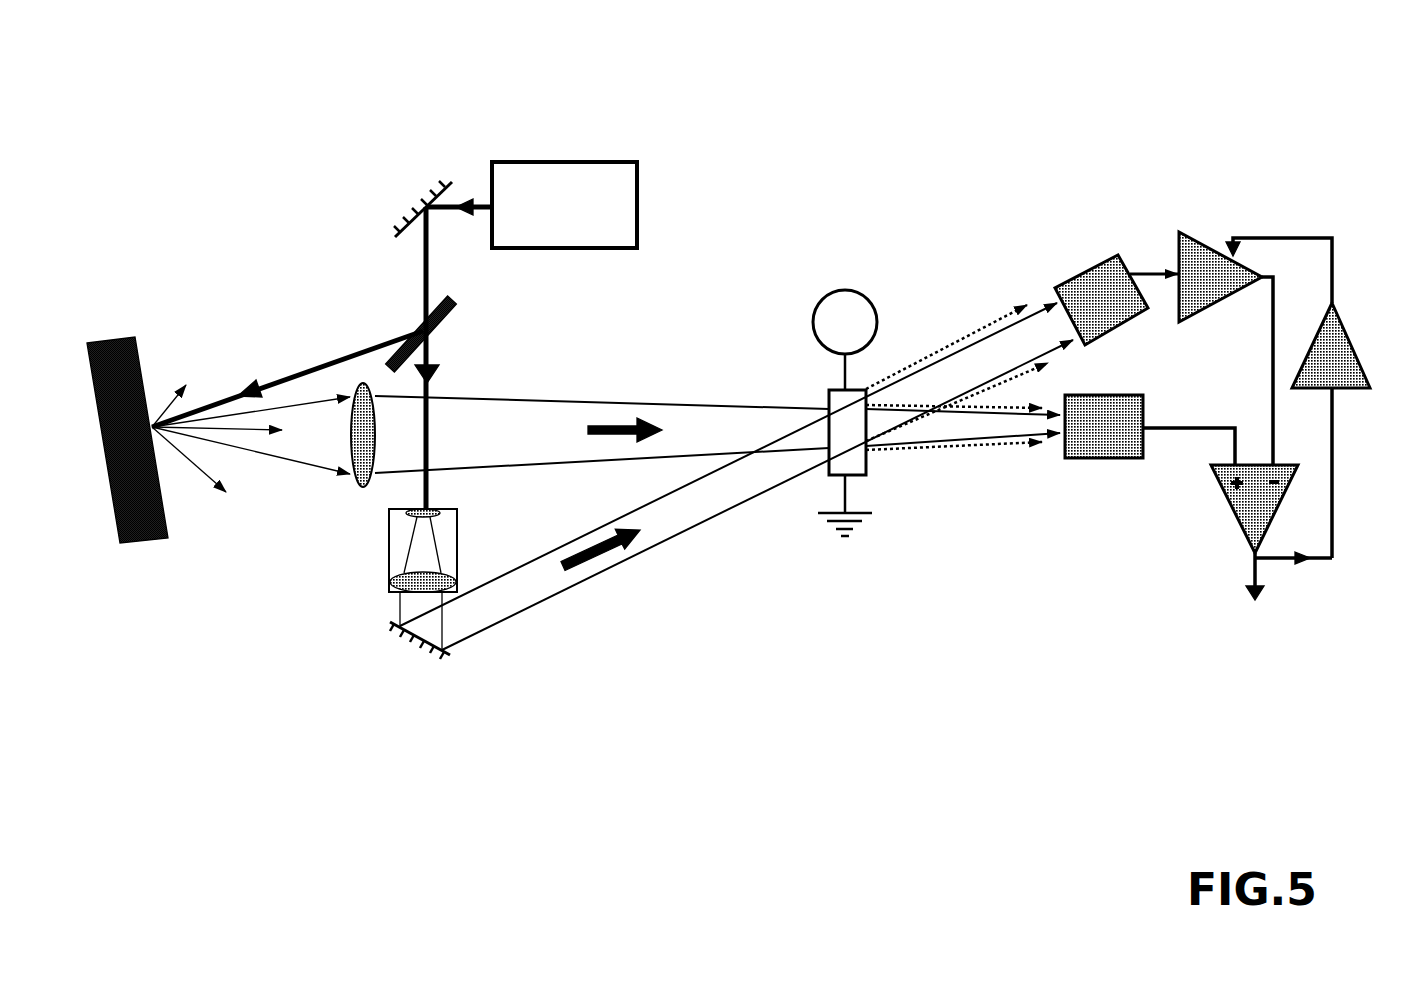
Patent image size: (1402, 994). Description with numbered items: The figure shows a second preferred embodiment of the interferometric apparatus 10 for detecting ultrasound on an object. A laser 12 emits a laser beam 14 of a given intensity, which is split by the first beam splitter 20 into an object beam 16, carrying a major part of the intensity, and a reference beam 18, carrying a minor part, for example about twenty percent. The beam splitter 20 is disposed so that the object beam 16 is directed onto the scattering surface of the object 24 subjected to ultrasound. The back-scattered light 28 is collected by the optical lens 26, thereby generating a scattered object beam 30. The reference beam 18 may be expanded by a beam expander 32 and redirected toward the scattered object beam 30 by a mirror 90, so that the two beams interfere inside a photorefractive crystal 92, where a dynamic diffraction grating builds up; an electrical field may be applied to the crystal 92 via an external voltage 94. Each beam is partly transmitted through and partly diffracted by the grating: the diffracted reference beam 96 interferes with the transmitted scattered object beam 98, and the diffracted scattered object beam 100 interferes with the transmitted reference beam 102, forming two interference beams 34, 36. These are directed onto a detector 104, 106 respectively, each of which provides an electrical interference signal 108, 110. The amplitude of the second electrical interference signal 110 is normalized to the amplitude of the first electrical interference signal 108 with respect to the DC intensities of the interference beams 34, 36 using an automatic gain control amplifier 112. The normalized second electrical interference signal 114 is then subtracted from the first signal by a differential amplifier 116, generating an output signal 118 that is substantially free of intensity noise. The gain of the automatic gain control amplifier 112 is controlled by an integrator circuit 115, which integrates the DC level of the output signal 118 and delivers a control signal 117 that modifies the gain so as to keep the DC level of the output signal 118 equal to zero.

The interferometric apparatus 10 is at (882, 70).
The laser 12 is at (620, 217).
The laser beam 14 is at (483, 200).
The object beam 16 is at (352, 356).
The reference beam 18 is at (432, 382).
The first beam splitter 20 is at (450, 302).
The object 24 is at (118, 340).
The optical lens 26 is at (360, 493).
The back-scattered light 28 is at (307, 468).
The scattered object beam 30 is at (548, 425).
The beam expander 32 is at (388, 545).
The first interference beam 34 is at (942, 425).
The second interference beam 36 is at (952, 375).
The mirror 90 is at (442, 660).
The photorefractive crystal 92 is at (870, 465).
The external voltage 94 is at (848, 290).
The diffracted reference beam 96 is at (1015, 442).
The transmitted scattered object beam 98 is at (972, 440).
The diffracted scattered object beam 100 is at (985, 325).
The transmitted reference beam 102 is at (1025, 307).
The first detector 104 is at (1120, 448).
The second detector 106 is at (1098, 258).
The first electrical interference signal 108 is at (1185, 428).
The second electrical interference signal 110 is at (1145, 270).
The automatic gain control amplifier 112 is at (1207, 238).
The normalized second electrical interference signal 114 is at (1271, 362).
The integrator circuit 115 is at (1340, 315).
The differential amplifier 116 is at (1250, 517).
The control signal 117 is at (1300, 237).
The output signal 118 is at (1262, 575).